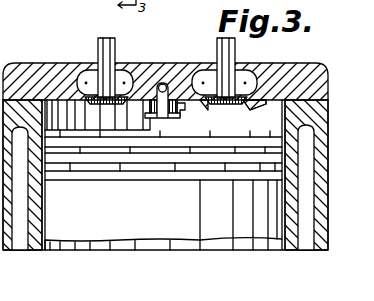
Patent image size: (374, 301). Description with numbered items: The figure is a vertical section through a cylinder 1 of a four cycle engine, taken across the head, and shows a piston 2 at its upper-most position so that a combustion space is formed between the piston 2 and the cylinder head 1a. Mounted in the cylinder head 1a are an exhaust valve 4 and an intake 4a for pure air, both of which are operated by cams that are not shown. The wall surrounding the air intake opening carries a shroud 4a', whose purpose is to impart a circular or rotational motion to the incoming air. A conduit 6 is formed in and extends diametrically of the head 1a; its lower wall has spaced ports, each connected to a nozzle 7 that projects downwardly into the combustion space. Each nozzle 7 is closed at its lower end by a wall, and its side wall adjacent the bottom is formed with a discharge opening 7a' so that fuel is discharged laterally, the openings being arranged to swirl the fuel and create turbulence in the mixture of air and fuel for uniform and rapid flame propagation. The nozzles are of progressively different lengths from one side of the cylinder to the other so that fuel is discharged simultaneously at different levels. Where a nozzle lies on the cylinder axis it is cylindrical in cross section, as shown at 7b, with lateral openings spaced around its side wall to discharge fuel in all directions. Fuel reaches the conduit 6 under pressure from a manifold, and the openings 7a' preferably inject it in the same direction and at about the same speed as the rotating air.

The cylinder 1 is at (38, 250).
The cylinder head 1a is at (42, 66).
The piston 2 is at (212, 228).
The exhaust valve 4 is at (98, 46).
The intake 4a is at (221, 66).
The shroud 4a' is at (250, 72).
The conduit 6 is at (163, 82).
The nozzle 7 is at (185, 106).
The discharge opening 7a' is at (163, 164).
The cylindrical nozzle 7b is at (163, 150).